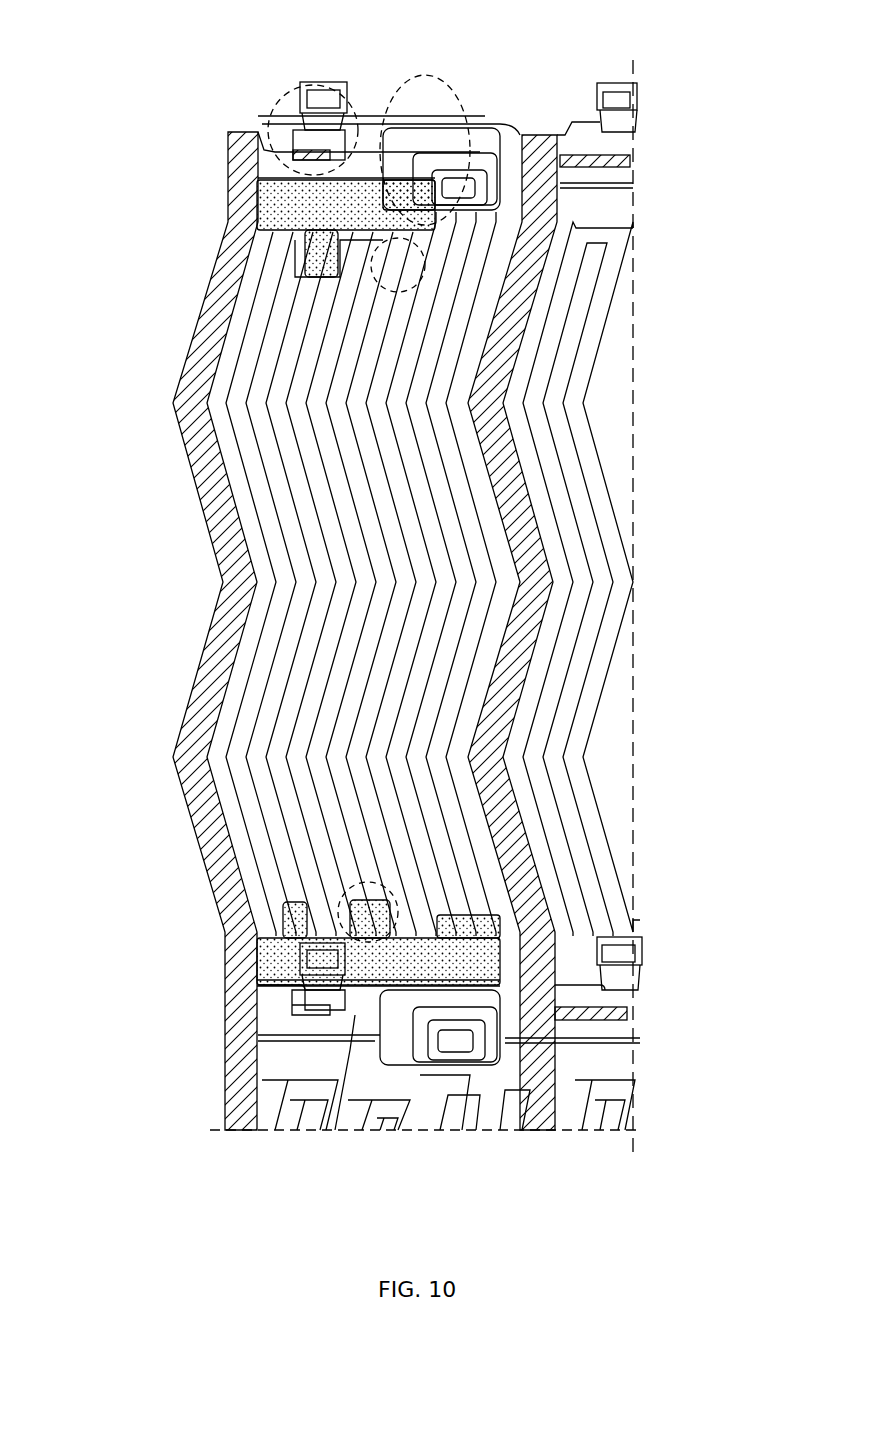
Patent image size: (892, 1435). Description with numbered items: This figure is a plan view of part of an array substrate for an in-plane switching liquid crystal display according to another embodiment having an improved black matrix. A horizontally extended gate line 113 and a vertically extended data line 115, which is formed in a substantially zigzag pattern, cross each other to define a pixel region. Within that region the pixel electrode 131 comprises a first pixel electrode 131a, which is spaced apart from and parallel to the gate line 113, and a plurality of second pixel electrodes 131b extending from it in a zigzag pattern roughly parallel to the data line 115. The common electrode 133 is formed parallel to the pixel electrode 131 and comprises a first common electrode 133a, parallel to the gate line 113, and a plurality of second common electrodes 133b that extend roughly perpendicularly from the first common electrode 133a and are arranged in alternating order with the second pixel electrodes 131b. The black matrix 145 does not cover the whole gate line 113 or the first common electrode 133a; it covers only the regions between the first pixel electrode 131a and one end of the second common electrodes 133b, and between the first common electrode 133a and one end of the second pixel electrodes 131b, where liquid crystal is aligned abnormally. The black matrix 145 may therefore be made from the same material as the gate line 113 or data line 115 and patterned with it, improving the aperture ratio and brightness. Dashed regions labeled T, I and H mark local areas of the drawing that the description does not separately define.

The thin film transistor region T is at (288, 104).
The contact region I is at (428, 180).
The contact hole region H is at (355, 890).
The gate line 113 is at (355, 1015).
The data line 115 is at (175, 382).
The pixel electrode 131 is at (521, 604).
The first pixel electrode 131a is at (455, 958).
The second pixel electrodes 131b is at (478, 928).
The common electrode 133 is at (272, 558).
The first common electrode 133a is at (278, 214).
The second common electrodes 133b is at (250, 262).
The black matrix 145 is at (410, 175).